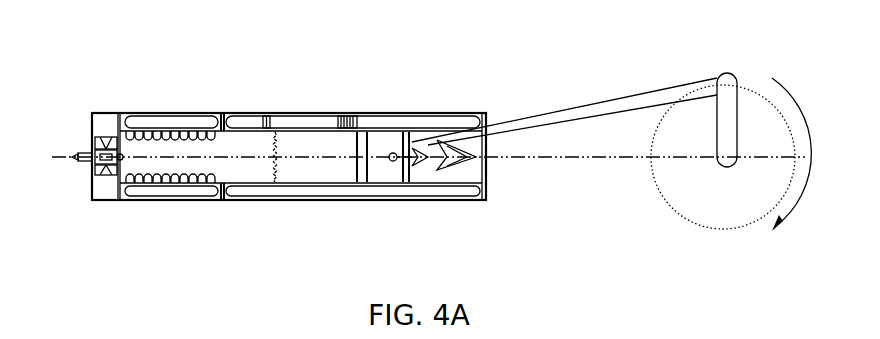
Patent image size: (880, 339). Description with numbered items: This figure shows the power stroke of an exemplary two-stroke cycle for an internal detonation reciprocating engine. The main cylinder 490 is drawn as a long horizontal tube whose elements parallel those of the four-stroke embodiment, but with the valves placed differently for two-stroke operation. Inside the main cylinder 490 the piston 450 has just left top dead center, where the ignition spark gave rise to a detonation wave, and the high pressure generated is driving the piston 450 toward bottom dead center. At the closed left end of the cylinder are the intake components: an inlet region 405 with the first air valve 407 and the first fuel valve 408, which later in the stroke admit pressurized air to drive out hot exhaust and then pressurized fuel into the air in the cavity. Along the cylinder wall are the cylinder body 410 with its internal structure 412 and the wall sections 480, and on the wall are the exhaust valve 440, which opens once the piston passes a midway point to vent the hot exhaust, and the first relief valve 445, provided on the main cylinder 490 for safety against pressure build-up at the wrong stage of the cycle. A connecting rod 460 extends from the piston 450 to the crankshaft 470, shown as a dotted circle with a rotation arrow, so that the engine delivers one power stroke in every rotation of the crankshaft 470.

The inlet port 405 is at (76, 160).
The air valve AV1 407 is at (92, 140).
The fuel valve FV1 408 is at (93, 163).
The cylinder housing 410 is at (180, 200).
The spring 412 is at (152, 178).
The exhaust valve EV 440 is at (344, 113).
The relief valve RV1 445 is at (265, 106).
The piston 450 is at (383, 141).
The connecting rod 460 is at (622, 96).
The crankshaft 470 is at (741, 205).
The cylinder wall slot 480 is at (473, 193).
The main cylinder 490 is at (397, 205).